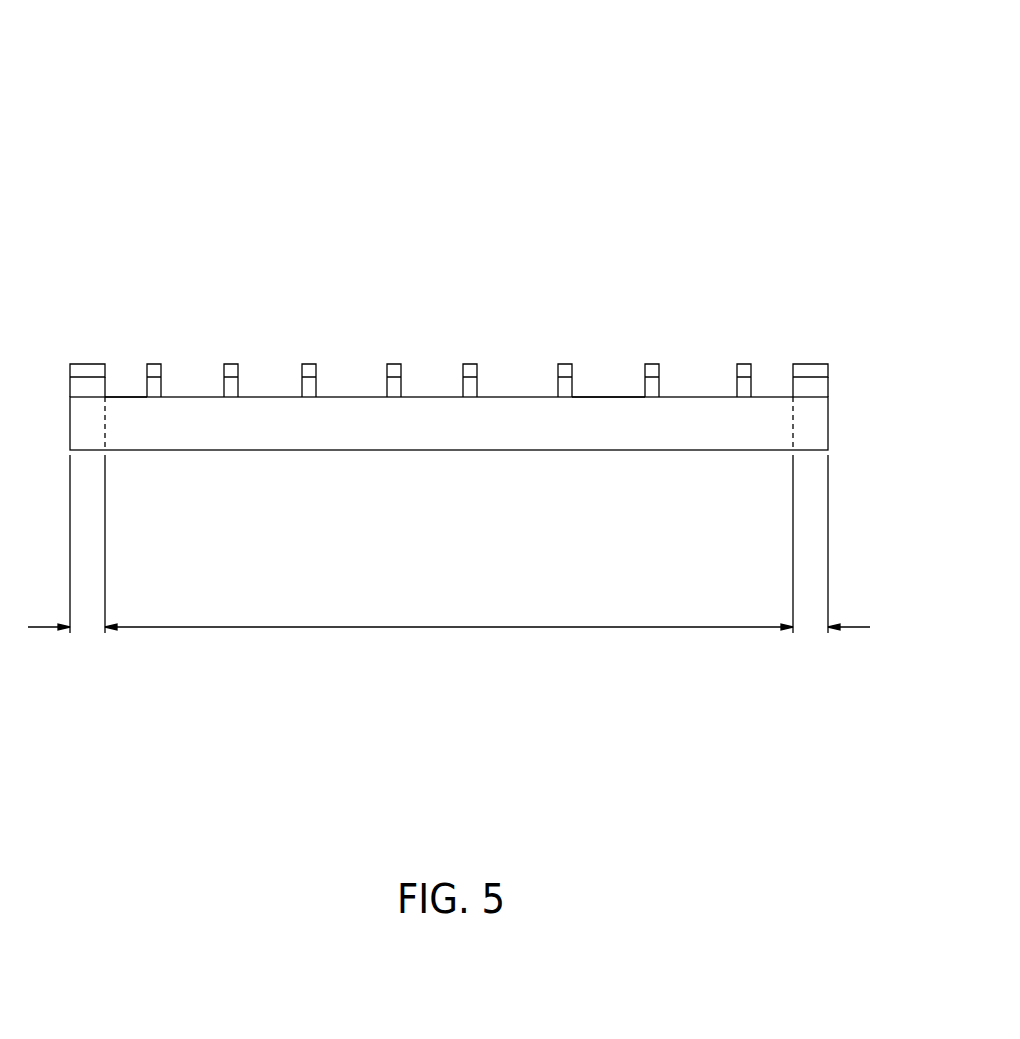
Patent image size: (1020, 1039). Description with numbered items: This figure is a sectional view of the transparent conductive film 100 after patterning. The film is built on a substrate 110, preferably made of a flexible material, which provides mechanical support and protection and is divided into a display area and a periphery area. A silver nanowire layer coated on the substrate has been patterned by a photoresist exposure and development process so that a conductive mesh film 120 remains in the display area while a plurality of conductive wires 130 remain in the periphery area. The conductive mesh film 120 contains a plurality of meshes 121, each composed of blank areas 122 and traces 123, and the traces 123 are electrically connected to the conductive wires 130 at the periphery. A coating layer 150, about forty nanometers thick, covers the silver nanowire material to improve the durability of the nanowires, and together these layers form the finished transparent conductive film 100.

The transparent conductive film 100 is at (690, 60).
The substrate 110 is at (565, 437).
The conductive mesh film 120 is at (122, 366).
The meshes 121 is at (680, 303).
The blank areas 122 is at (602, 390).
The traces 123 is at (652, 370).
The conductive wires 130 is at (818, 387).
The coating layer 150 is at (818, 372).